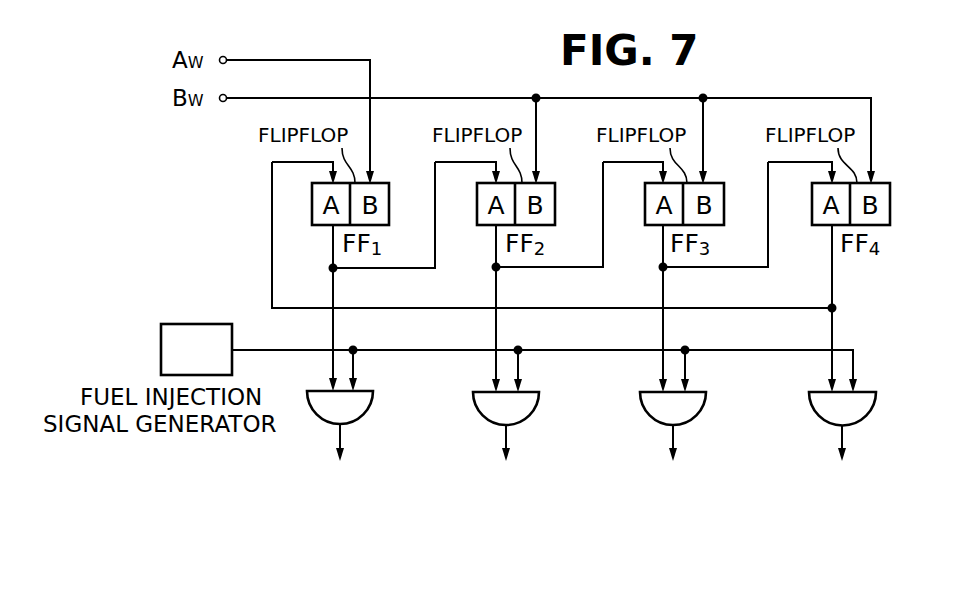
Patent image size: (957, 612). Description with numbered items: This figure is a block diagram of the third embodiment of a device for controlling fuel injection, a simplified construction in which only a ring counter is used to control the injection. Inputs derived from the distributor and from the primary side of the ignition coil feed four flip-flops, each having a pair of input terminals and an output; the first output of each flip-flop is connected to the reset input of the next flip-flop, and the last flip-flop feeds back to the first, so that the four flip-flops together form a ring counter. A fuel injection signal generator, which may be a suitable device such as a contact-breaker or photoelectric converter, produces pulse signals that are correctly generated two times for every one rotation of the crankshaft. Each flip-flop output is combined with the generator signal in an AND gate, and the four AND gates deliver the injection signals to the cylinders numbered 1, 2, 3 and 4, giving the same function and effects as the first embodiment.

The fuel injection output signal to cylinder No. 1 (AND1 output) 1 is at (701, 443).
The fuel injection output signal to cylinder No. 2 (AND2 output) 2 is at (534, 443).
The fuel injection output signal to cylinder No. 3 (AND3 output) 3 is at (870, 443).
The fuel injection output signal to cylinder No. 4 (AND4 output) 4 is at (367, 443).